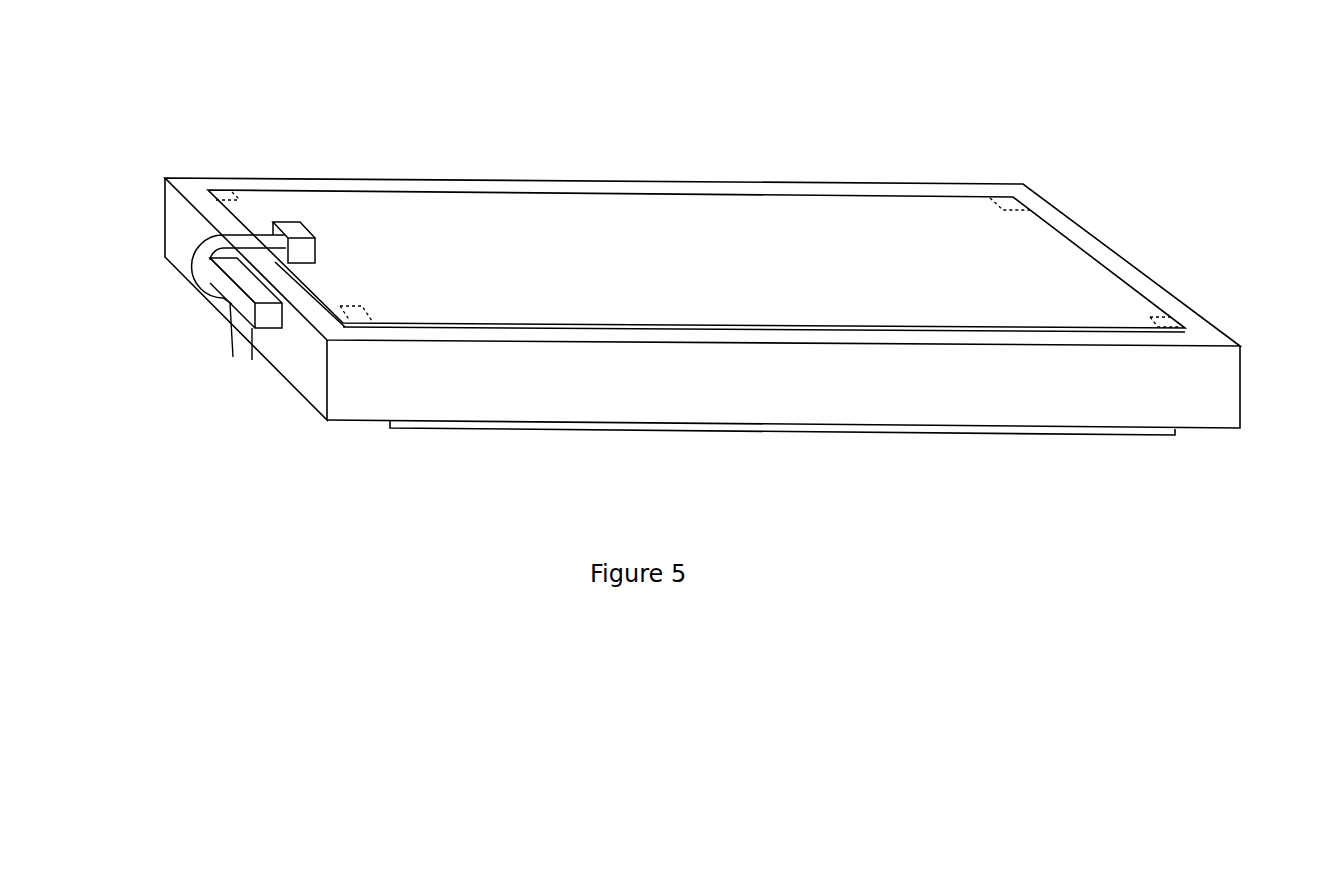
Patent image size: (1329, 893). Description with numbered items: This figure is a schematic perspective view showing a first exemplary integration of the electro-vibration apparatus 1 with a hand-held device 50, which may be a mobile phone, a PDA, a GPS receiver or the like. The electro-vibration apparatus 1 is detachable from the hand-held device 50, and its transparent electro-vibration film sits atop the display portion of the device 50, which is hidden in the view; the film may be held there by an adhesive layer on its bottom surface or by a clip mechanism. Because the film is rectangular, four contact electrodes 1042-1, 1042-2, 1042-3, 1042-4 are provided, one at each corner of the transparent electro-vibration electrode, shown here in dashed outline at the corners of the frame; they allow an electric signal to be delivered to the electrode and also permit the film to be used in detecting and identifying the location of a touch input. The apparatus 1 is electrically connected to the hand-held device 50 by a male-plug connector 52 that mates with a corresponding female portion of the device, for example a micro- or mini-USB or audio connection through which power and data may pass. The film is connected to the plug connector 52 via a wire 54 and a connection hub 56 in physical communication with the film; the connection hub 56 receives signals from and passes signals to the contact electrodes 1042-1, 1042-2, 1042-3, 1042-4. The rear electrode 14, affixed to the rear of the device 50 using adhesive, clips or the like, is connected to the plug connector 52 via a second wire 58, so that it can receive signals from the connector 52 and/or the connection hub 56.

The electro-vibration apparatus 1 is at (653, 128).
The hand-held device 50 is at (1212, 398).
The rear electrode 14 is at (433, 429).
The male-plug connector 52 is at (270, 316).
The wire 54 is at (200, 292).
The connection hub 56 is at (302, 232).
The second wire 58 is at (268, 363).
The contact electrode 1042-1 is at (350, 312).
The contact electrode 1042-2 is at (1180, 320).
The contact electrode 1042-3 is at (1010, 203).
The contact electrode 1042-4 is at (210, 195).